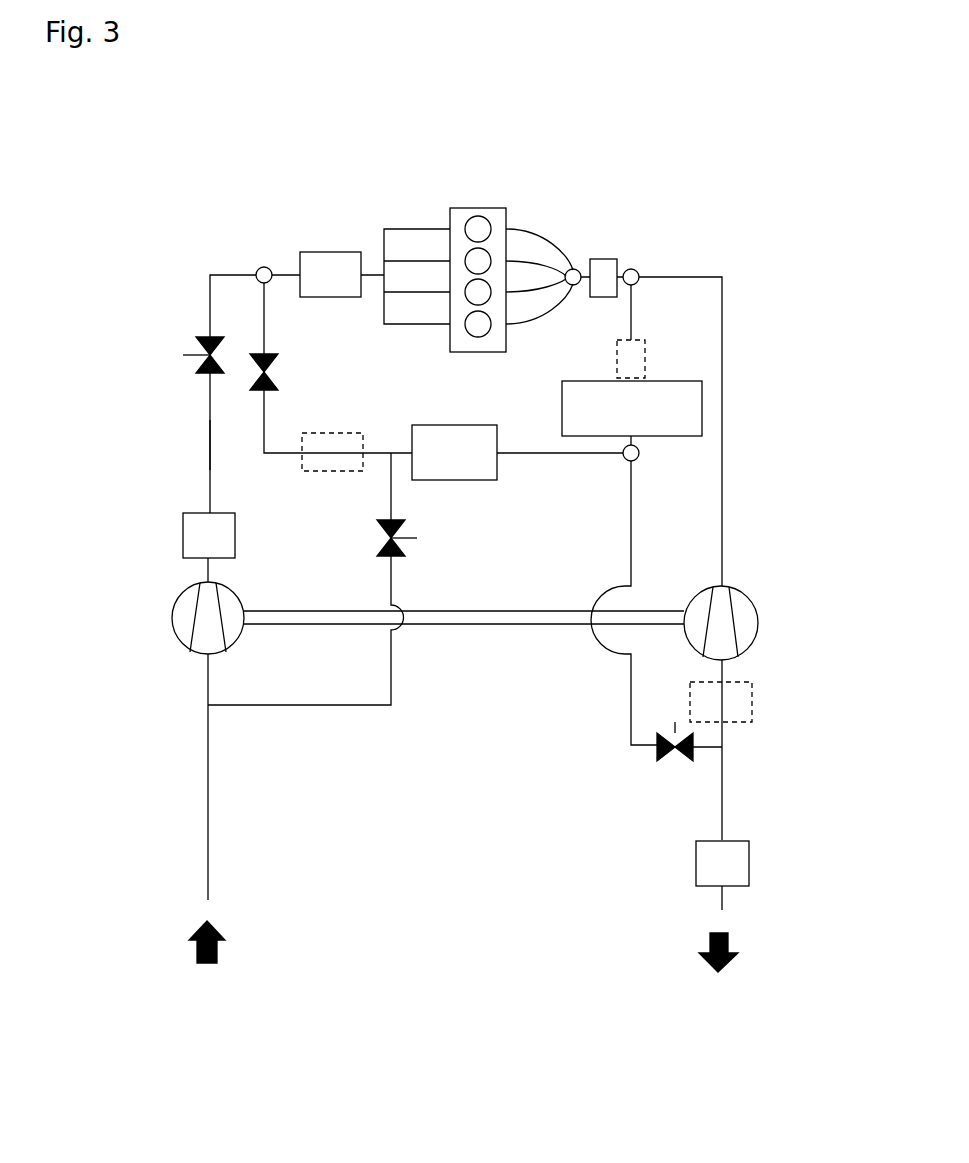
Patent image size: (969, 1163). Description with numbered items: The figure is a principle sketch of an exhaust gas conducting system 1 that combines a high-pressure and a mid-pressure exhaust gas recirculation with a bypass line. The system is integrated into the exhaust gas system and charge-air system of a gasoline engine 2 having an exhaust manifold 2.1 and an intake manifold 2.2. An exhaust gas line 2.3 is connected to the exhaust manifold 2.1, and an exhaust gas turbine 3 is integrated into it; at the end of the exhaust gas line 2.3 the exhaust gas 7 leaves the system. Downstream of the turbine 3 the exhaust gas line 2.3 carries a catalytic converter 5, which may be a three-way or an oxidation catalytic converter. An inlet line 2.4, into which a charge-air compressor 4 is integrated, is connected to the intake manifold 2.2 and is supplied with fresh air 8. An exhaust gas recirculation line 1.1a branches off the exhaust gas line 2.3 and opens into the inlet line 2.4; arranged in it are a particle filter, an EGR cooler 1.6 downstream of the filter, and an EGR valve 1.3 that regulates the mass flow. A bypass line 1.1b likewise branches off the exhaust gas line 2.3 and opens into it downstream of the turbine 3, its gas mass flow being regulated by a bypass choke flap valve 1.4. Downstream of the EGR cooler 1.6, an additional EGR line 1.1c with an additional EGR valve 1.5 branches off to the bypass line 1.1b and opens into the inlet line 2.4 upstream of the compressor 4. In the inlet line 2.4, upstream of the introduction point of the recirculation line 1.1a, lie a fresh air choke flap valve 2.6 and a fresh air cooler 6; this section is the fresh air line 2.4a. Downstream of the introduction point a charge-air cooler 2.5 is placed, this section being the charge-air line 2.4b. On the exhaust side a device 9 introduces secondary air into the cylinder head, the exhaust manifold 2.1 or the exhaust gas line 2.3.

The exhaust gas conducting system 1 is at (805, 228).
The gasoline engine 2 is at (498, 212).
The exhaust manifold 2.1 is at (550, 240).
The intake manifold 2.2 is at (408, 228).
The exhaust gas line 2.3 is at (723, 388).
The inlet line 2.4 is at (200, 463).
The fresh air line 2.4a is at (207, 437).
The charge-air line 2.4b is at (272, 268).
The charge-air cooler 2.5 is at (328, 274).
The fresh air choke flap valve 2.6 is at (185, 355).
The exhaust gas recirculation line 1.1a is at (264, 305).
The bypass line 1.1b is at (631, 500).
The additional EGR line 1.1c is at (391, 650).
The EGR valve 1.3 is at (278, 372).
The bypass choke flap valve 1.4 is at (665, 760).
The additional EGR valve 1.5 is at (400, 552).
The EGR cooler 1.6 is at (454, 452).
The exhaust gas turbine 3 is at (758, 612).
The charge-air compressor 4 is at (172, 618).
The catalytic converter 5 is at (752, 712).
The fresh air cooler 6 is at (209, 547).
The exhaust gas 7 is at (729, 938).
The fresh air 8 is at (218, 950).
The device for introducing secondary air 9 is at (602, 278).